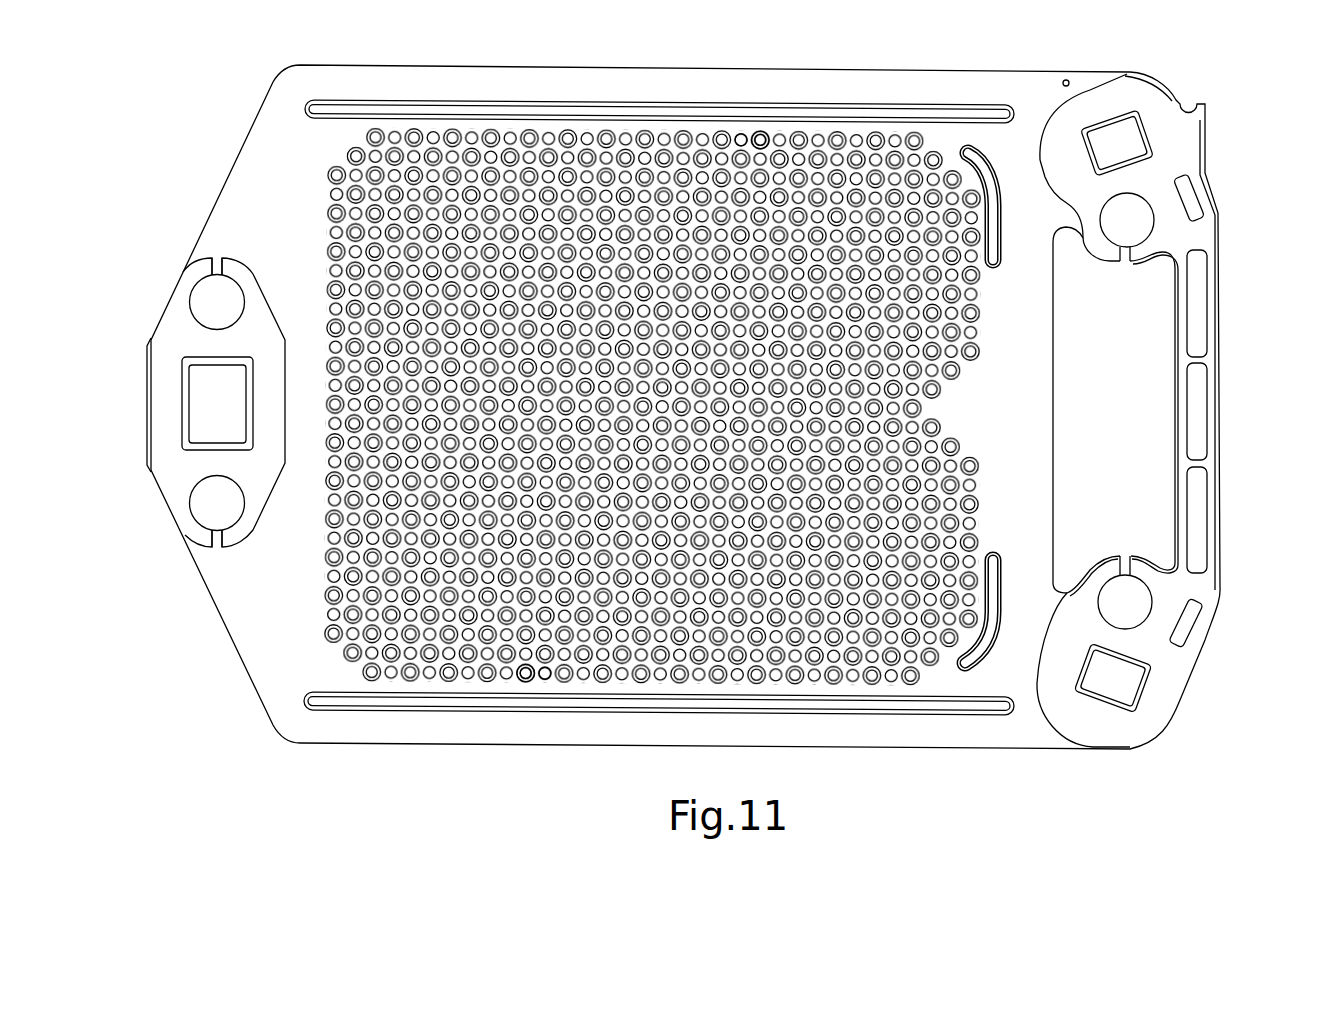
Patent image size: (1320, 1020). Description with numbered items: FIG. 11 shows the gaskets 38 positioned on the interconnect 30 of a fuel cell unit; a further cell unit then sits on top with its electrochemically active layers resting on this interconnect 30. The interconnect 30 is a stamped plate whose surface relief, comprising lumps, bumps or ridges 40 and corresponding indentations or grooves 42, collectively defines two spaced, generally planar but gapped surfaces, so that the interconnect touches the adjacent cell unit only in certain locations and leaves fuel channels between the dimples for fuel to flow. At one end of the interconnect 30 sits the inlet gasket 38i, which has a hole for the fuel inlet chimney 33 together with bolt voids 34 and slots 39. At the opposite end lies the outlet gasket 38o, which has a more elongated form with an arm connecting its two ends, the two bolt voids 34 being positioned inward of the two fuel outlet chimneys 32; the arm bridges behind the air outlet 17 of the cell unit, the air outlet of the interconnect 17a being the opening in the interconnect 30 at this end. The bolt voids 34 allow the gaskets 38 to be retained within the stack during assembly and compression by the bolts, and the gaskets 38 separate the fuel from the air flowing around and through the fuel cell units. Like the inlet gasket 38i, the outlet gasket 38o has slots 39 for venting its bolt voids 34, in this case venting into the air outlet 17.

The air outlet 17 is at (1186, 410).
The air outlet of interconnect 17a is at (1150, 356).
The interconnect 30 is at (883, 64).
The fuel outlet chimney 32 is at (1113, 140).
The fuel inlet chimney 33 is at (205, 432).
The bolt void 34 is at (213, 306).
The gaskets 38 is at (695, 406).
The inlet gasket 38i is at (167, 348).
The outlet gasket 38o is at (1173, 147).
The slot 39 is at (217, 268).
The lumps or bumps, ridges or troughs 40 is at (760, 129).
The indentations or grooves 42 is at (741, 132).